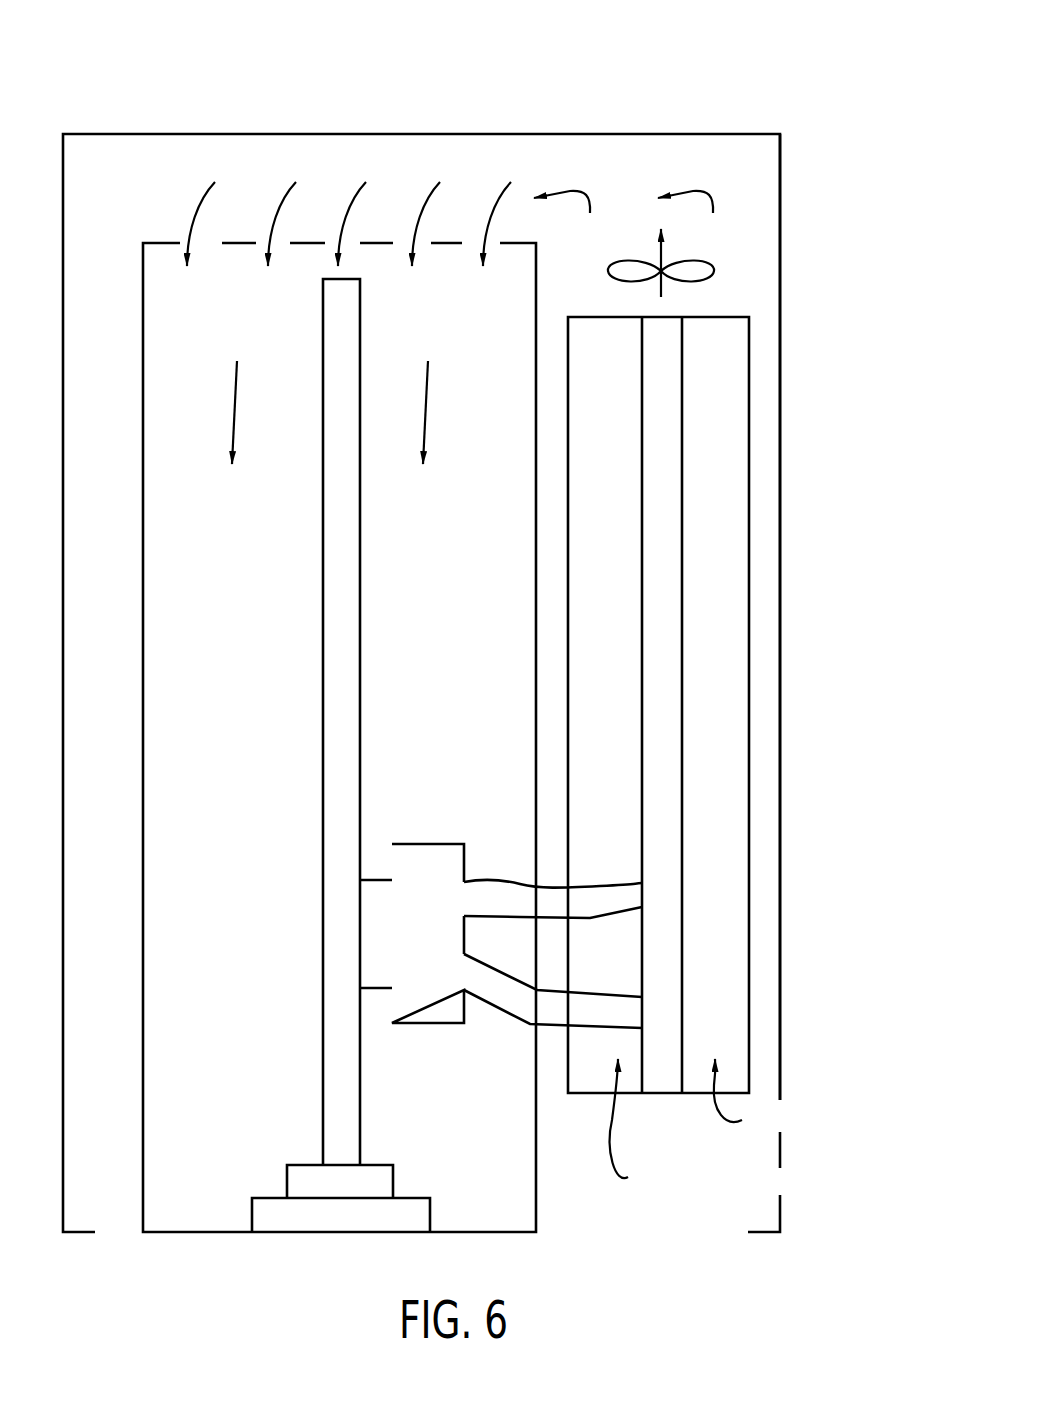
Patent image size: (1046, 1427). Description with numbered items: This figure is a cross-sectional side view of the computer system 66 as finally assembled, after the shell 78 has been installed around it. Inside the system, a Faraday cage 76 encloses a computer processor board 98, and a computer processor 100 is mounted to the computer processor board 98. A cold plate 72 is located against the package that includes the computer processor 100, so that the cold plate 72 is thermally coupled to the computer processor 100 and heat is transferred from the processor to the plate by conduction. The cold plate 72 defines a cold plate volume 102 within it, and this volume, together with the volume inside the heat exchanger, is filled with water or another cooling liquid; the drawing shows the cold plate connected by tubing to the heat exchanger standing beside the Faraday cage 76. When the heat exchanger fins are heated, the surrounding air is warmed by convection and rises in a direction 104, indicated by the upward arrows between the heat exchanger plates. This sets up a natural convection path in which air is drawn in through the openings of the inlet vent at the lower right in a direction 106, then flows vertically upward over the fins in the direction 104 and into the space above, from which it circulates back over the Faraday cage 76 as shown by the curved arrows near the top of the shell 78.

The computer system 66 is at (764, 84).
The cold plate 72 is at (431, 1023).
The Faraday cage 76 is at (143, 503).
The shell 78 is at (780, 222).
The computer processor board 98 is at (345, 678).
The computer processor 100 is at (377, 903).
The cold plate volume 102 is at (417, 869).
The direction 104 is at (606, 609).
The direction 106 is at (799, 1113).